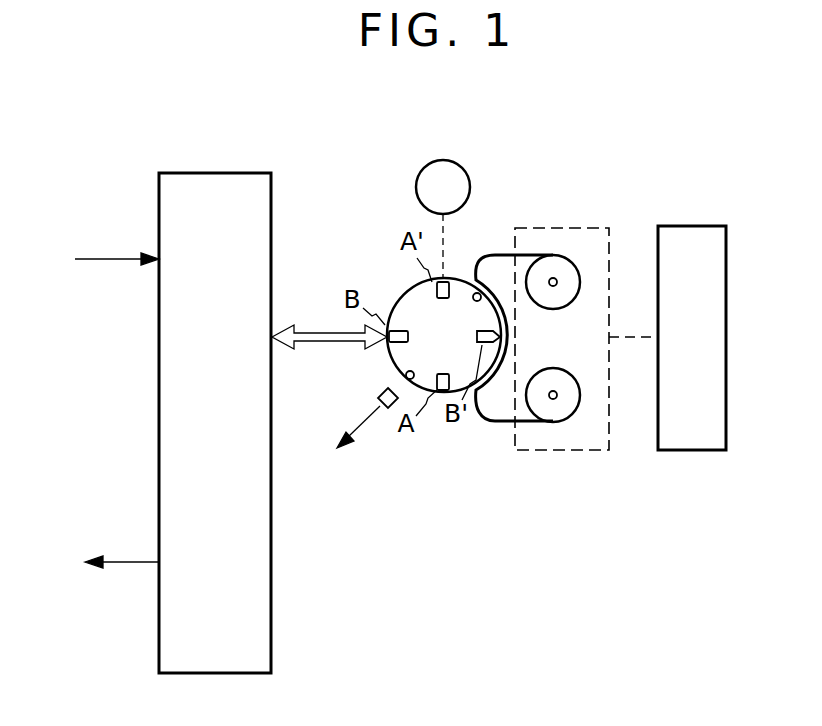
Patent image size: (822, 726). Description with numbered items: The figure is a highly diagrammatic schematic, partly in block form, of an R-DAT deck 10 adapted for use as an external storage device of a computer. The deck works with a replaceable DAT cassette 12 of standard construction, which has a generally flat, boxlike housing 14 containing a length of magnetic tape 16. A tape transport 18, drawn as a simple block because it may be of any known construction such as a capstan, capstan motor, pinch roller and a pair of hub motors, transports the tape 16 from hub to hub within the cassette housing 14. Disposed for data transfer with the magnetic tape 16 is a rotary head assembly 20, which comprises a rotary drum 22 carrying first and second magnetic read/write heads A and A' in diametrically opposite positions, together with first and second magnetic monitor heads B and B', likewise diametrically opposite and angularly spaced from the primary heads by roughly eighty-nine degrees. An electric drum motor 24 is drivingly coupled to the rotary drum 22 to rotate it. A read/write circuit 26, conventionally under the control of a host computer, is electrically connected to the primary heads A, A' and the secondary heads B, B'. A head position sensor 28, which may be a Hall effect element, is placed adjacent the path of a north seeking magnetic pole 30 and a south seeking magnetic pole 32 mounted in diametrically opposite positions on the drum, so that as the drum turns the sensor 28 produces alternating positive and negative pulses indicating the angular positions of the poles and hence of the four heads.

The R-DAT deck 10 is at (656, 140).
The DAT cassette 12 is at (586, 218).
The cassette housing 14 is at (578, 451).
The magnetic tape 16 is at (500, 256).
The tape transport 18 is at (690, 226).
The rotary head assembly 20 is at (388, 282).
The rotary drum 22 is at (388, 350).
The drum motor 24 is at (416, 183).
The read/write circuit 26 is at (272, 212).
The head position sensor 28 is at (390, 410).
The north seeking magnetic pole 30 is at (460, 280).
The south seeking magnetic pole 32 is at (405, 377).